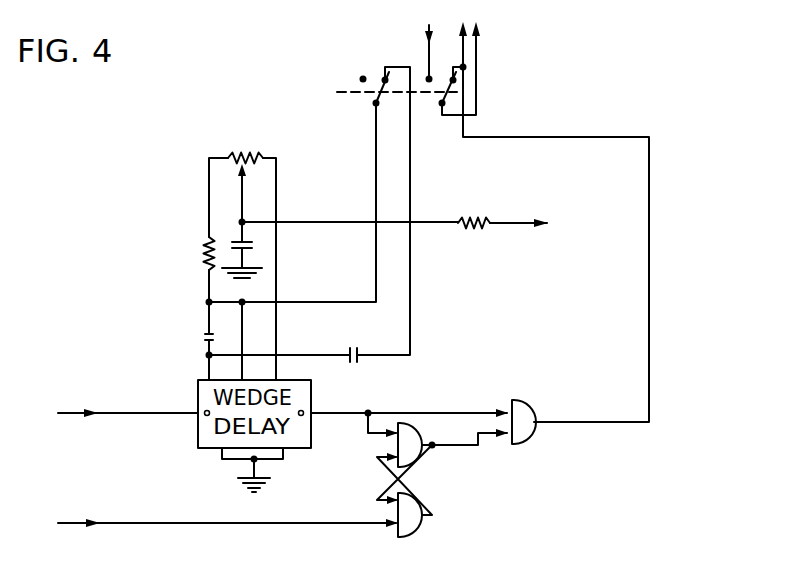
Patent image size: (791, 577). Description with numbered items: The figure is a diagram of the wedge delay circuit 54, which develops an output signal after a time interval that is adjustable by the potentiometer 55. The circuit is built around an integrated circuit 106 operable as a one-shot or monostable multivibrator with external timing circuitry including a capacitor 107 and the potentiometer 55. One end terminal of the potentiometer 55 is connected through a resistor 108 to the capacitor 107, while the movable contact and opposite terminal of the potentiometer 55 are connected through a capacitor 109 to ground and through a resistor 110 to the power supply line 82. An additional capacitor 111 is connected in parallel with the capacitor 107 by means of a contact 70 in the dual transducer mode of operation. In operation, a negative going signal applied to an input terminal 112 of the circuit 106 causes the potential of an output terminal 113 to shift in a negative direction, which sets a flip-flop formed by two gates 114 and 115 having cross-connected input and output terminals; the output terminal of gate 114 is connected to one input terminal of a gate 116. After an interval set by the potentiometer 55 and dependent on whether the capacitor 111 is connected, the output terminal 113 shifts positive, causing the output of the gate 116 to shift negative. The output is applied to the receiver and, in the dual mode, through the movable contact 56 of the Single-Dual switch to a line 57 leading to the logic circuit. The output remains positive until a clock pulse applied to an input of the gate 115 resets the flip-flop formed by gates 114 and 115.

The wedge delay circuit 54 is at (95, 299).
The potentiometer 55 is at (248, 153).
The movable contact 56 is at (444, 105).
The line 57 is at (478, 42).
The contact 70 is at (378, 105).
The power supply line 82 is at (518, 223).
The integrated circuit 106 is at (290, 443).
The capacitor 107 is at (205, 334).
The resistor 108 is at (207, 262).
The capacitor 109 is at (248, 245).
The resistor 110 is at (470, 218).
The additional capacitor 111 is at (349, 352).
The input terminal 112 is at (206, 411).
The output terminal 113 is at (303, 410).
The gate 114 is at (410, 455).
The gate 115 is at (420, 520).
The gate 116 is at (522, 437).